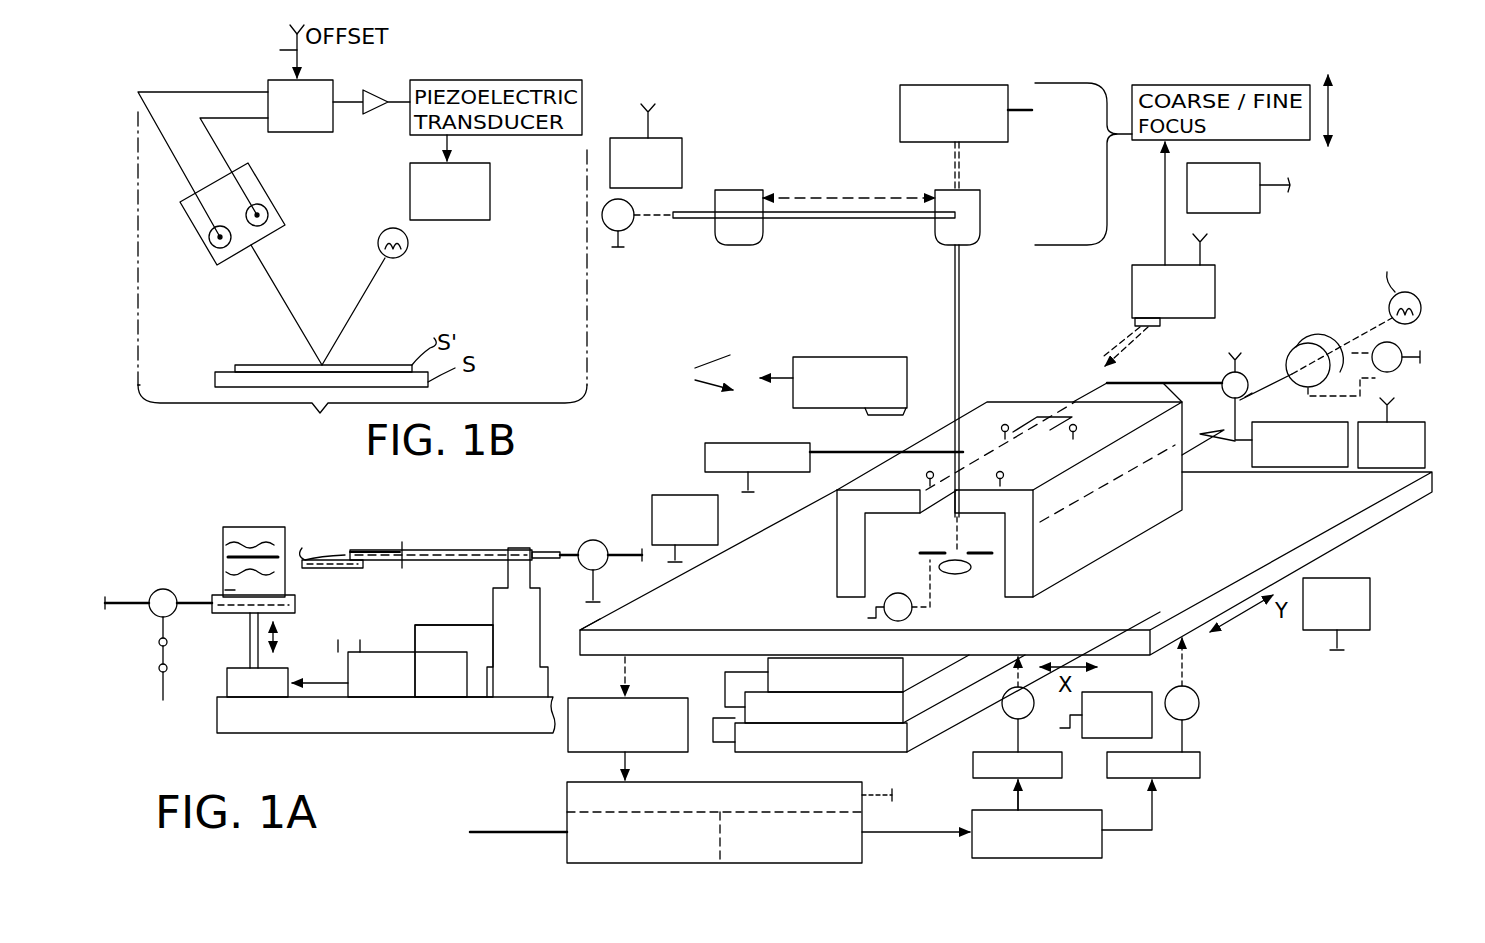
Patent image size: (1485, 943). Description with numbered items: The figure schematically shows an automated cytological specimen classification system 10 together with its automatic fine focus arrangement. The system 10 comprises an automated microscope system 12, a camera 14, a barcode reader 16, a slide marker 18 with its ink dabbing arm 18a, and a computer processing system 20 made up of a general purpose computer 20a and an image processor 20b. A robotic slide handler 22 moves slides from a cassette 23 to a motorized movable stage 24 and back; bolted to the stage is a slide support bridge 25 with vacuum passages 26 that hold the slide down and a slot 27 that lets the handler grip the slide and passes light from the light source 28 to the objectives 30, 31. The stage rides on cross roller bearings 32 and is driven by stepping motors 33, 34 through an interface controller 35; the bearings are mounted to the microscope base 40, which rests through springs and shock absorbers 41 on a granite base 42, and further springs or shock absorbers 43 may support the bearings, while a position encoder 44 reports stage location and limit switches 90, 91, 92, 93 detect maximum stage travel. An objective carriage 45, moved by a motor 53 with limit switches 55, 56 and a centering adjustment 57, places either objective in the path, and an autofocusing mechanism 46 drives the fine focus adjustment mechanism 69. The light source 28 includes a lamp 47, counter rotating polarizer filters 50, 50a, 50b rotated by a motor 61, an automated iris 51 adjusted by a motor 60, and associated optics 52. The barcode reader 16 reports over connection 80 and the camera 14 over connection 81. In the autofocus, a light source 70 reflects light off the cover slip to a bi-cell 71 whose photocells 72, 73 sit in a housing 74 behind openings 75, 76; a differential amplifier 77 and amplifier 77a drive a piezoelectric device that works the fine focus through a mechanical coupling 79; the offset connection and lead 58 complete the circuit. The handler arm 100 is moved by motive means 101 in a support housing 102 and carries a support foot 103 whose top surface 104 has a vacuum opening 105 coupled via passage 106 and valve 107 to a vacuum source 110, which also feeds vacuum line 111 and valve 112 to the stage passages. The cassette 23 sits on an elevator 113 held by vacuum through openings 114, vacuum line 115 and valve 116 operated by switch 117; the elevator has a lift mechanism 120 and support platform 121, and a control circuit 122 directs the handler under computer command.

In FIG. 1A, the automated cytological specimen classification system 10 is at (680, 438).
In FIG. 1A, the automated microscope system 12 is at (699, 372).
In FIG. 1A, the camera 14 is at (905, 142).
In FIG. 1A, the barcode reader 16 is at (862, 357).
In FIG. 1A, the slide marker 18 is at (756, 443).
In FIG. 1A, the arm 18a is at (862, 452).
In FIG. 1A, the computer processing system 20 is at (822, 783).
In FIG. 1A, the general purpose computer 20a is at (870, 832).
In FIG. 1A, the image processor 20b is at (567, 855).
In FIG. 1A, the robotic slide handler 22 is at (340, 527).
In FIG. 1A, the cassette 23 is at (262, 527).
In FIG. 1A, the motorized movable stage 24 is at (600, 619).
In FIG. 1A, the slide support bridge 25 is at (833, 495).
In FIG. 1A, the passages 26 is at (1113, 432).
In FIG. 1A, the slot 27 is at (912, 520).
In FIG. 1A, the light source 28 is at (1428, 342).
In FIG. 1A, the microscope objective 30 is at (985, 240).
In FIG. 1A, the microscope objective 31 is at (745, 246).
In FIG. 1A, the cross roller bearings 32 is at (920, 668).
In FIG. 1A, the stepping motor 33 is at (1006, 716).
In FIG. 1A, the stepping motor 34 is at (1196, 692).
In FIG. 1A, the interface controller 35 is at (1055, 810).
In FIG. 1A, the microscope base 40 is at (305, 733).
In FIG. 1A, the springs and vibration damping shock absorbers 41 is at (770, 770).
In FIG. 1A, the granite base 42 is at (735, 748).
In FIG. 1A, the springs and/or shock absorbers 43 is at (725, 690).
In FIG. 1A, the position encoder 44 is at (590, 698).
In FIG. 1A, the objective carriage 45 is at (822, 132).
In FIG. 1B, the autofocusing mechanism 46 is at (196, 282).
In FIG. 1A, the autofocusing mechanism 46 is at (1248, 268).
In FIG. 1A, the lamp 47 is at (1388, 269).
In FIG. 1A, the light intensity control filters 50 is at (1338, 325).
In FIG. 1A, the polarizer filter 50a is at (1320, 333).
In FIG. 1A, the polarizer filter 50b is at (1296, 350).
In FIG. 1A, the automated iris 51 is at (1000, 545).
In FIG. 1A, the reflectors, prisms, lenses, light conductors 52 is at (970, 570).
In FIG. 1A, the motor 53 is at (628, 232).
In FIG. 1A, the limit switch 55 is at (682, 175).
In FIG. 1A, the limit switch 56 is at (1262, 162).
In FIG. 1A, the adjustment 57 is at (655, 110).
In FIG. 1A, the limit switch lead 58 is at (1275, 192).
In FIG. 1A, the motor 60 is at (898, 593).
In FIG. 1A, the motor 61 is at (1398, 370).
In FIG. 1B, the fine focus adjustment mechanism 69 is at (490, 186).
In FIG. 1B, the light source 70 is at (373, 235).
In FIG. 1B, the bi-cell 71 is at (262, 190).
In FIG. 1B, the photocell 72 is at (208, 245).
In FIG. 1B, the photocell 73 is at (270, 212).
In FIG. 1B, the housing 74 is at (183, 205).
In FIG. 1B, the opening 75 is at (226, 258).
In FIG. 1B, the opening 76 is at (275, 235).
In FIG. 1B, the differential amplifier 77 is at (333, 84).
In FIG. 1B, the amplifier 77a is at (380, 92).
In FIG. 1B, the mechanical coupling 79 is at (280, 50).
In FIG. 1A, the connection 80 is at (775, 377).
In FIG. 1A, the connection 81 is at (1030, 112).
In FIG. 1A, the limit switch 90 is at (1303, 620).
In FIG. 1A, the limit switch 91 is at (1380, 468).
In FIG. 1A, the limit switch 92 is at (676, 495).
In FIG. 1A, the limit switch 93 is at (1108, 692).
In FIG. 1A, the arm 100 is at (450, 550).
In FIG. 1A, the motive means 101 is at (420, 600).
In FIG. 1A, the support housing 102 is at (412, 628).
In FIG. 1A, the support foot 103 is at (318, 570).
In FIG. 1A, the top surface 104 is at (396, 534).
In FIG. 1A, the opening 105 is at (329, 543).
In FIG. 1A, the passage 106 is at (505, 548).
In FIG. 1A, the valve 107 is at (602, 540).
In FIG. 1A, the vacuum source 110 is at (1256, 465).
In FIG. 1A, the vacuum line 111 is at (1182, 382).
In FIG. 1A, the valve 112 is at (1226, 374).
In FIG. 1A, the elevator 113 is at (232, 631).
In FIG. 1A, the openings 114 is at (226, 590).
In FIG. 1A, the vacuum line 115 is at (185, 598).
In FIG. 1A, the valve 116 is at (152, 594).
In FIG. 1A, the electrical switch 117 is at (158, 646).
In FIG. 1A, the lift mechanism 120 is at (270, 668).
In FIG. 1A, the support platform 121 is at (283, 613).
In FIG. 1A, the electronic control circuit 122 is at (362, 640).